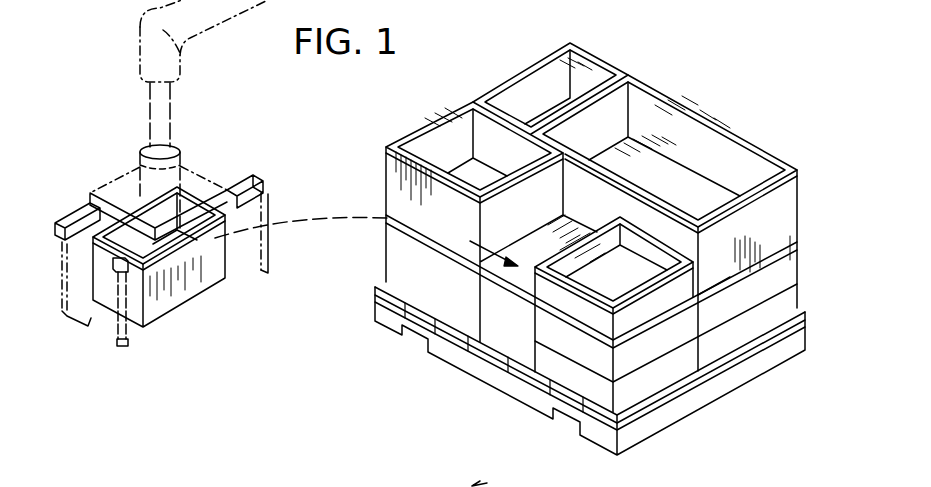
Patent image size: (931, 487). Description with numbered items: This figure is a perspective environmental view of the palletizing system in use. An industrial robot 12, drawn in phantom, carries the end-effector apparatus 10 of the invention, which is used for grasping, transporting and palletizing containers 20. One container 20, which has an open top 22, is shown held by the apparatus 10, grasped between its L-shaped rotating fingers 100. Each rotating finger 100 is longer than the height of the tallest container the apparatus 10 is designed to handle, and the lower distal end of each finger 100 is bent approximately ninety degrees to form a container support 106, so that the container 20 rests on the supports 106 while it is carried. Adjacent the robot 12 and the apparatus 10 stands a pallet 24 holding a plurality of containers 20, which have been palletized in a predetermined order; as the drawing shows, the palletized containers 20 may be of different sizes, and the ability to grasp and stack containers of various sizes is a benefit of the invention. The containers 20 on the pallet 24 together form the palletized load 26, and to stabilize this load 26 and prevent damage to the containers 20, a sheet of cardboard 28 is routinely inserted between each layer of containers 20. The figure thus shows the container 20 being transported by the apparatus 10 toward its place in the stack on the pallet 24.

The end-effector apparatus 10 is at (78, 199).
The industrial robot 12 is at (138, 88).
The container 20 is at (117, 302).
The open top 22 is at (108, 246).
The pallet 24 is at (693, 400).
The palletized load 26 is at (797, 171).
The sheet of cardboard 28 is at (707, 297).
The L-shaped rotating finger 100 is at (118, 352).
The container support 106 is at (80, 327).